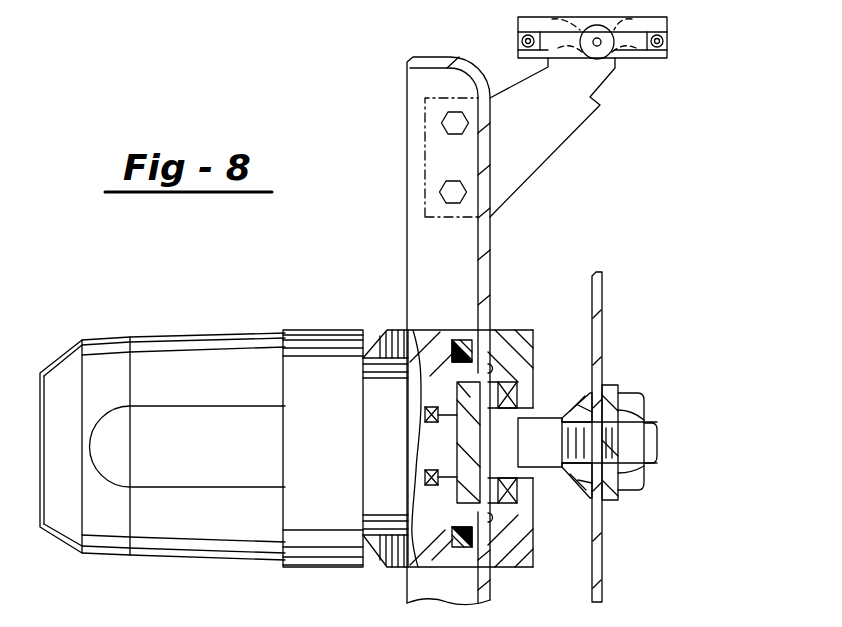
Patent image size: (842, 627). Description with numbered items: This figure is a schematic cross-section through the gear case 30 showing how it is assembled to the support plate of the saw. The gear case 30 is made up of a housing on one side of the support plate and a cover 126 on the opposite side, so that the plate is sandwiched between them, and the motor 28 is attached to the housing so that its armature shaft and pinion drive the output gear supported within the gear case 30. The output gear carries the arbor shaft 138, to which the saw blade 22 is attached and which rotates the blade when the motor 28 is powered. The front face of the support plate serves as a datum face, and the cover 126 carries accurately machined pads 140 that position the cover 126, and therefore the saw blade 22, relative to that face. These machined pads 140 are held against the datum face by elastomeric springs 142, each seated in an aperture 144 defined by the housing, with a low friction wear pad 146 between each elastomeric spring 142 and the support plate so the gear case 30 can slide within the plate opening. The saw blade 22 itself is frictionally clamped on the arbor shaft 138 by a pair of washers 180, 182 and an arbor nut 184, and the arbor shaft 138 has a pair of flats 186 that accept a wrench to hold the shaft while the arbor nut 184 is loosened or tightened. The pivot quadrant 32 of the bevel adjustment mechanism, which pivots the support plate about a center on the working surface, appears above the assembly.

The saw blade 22 is at (596, 553).
The motor 28 is at (185, 533).
The gear case 30 is at (538, 261).
The pivot quadrant 32 is at (588, 80).
The cover 126 is at (535, 338).
The arbor shaft 138 is at (660, 447).
The machined pads 140 is at (490, 352).
The elastomeric springs 142 is at (450, 350).
The aperture 144 is at (452, 368).
The low friction wear pad 146 is at (473, 340).
The washer 180 is at (618, 496).
The washer 182 is at (587, 497).
The arbor nut 184 is at (618, 397).
The flats 186 is at (547, 430).